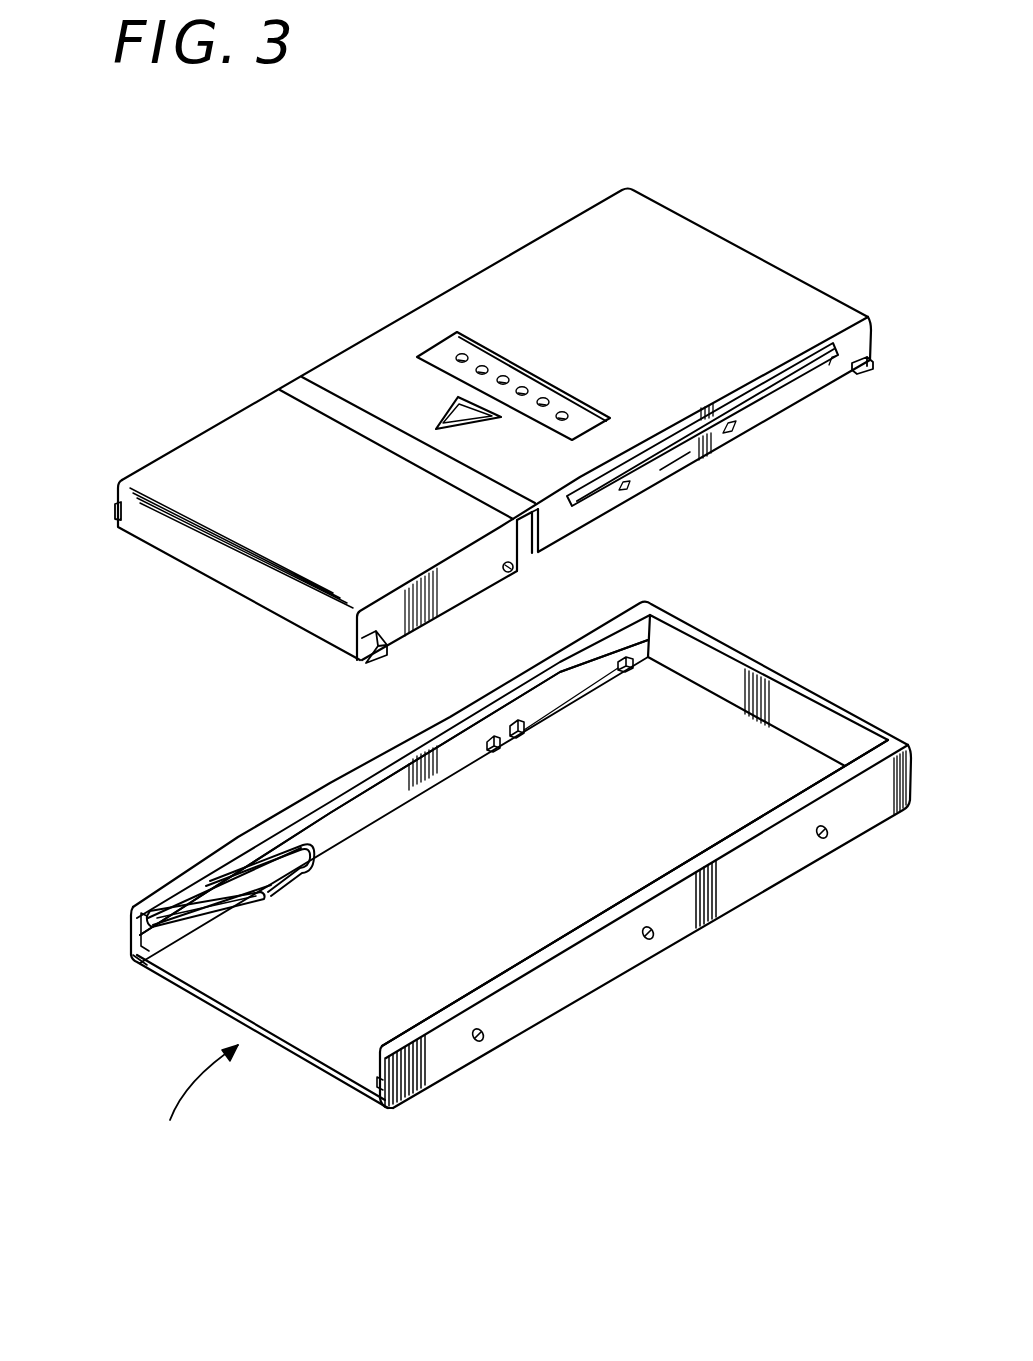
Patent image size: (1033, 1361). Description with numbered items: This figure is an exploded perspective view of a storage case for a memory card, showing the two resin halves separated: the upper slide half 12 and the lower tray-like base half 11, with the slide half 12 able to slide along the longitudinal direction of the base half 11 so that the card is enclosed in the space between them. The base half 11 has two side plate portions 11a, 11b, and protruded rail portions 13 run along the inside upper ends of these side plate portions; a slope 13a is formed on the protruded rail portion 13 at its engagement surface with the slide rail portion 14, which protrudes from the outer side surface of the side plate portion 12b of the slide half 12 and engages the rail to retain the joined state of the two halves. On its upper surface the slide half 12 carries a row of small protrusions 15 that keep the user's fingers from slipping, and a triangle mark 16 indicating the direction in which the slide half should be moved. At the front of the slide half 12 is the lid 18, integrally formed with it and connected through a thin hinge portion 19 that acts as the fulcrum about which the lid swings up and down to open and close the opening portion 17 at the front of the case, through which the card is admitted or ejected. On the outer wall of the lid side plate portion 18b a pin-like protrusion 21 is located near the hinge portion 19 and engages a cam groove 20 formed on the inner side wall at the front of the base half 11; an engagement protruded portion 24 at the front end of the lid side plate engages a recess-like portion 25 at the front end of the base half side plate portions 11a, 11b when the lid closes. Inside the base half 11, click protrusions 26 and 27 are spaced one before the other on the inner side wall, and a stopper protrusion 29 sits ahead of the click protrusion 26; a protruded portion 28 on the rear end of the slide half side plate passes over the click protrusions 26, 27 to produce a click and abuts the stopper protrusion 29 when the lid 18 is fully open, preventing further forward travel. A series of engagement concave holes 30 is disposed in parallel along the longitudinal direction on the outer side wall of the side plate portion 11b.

The base half 11 is at (590, 997).
The side plate portion of the base half 11a is at (437, 722).
The side plate portion of the base half 11b is at (745, 882).
The slide half 12 is at (603, 262).
The side plate portion of the slide half 12b is at (672, 462).
The protruded rail portion 13 is at (537, 686).
The slope 13a is at (265, 857).
The slide rail portion 14 is at (757, 403).
The small protrusions 15 is at (503, 375).
The triangle mark 16 is at (445, 415).
The opening portion 17 is at (194, 1100).
The lid 18 is at (300, 518).
The side plate portion of the lid 18b is at (442, 593).
The hinge portion 19 is at (370, 420).
The cam grooves 20 is at (200, 903).
The pin-like protrusions 21 is at (517, 570).
The engagement protruded portions 24 is at (113, 513).
The recess-like portions 25 is at (153, 973).
The click protrusion 26 is at (522, 734).
The click protrusion 27 is at (635, 668).
The protruded portions 28 is at (870, 372).
The stopper protrusions 29 is at (495, 748).
The engagement concave holes 30 is at (490, 1040).